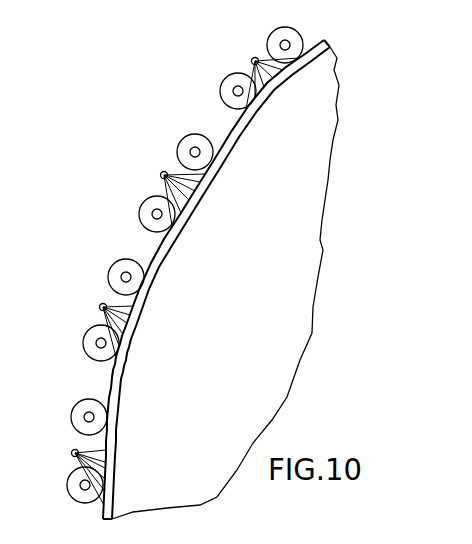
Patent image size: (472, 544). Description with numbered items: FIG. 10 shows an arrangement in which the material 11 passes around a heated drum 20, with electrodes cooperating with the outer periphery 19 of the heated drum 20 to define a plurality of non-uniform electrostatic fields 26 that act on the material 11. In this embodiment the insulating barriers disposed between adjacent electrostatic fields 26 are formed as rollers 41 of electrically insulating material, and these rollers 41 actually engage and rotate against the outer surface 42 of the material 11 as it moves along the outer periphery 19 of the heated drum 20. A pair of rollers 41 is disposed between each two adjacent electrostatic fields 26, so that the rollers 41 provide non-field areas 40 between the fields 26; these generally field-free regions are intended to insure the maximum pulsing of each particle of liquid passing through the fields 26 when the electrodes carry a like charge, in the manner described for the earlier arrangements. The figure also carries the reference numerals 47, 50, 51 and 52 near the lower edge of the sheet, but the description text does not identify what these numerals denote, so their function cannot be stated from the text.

The material 11 is at (159, 247).
The outer periphery 19 is at (213, 176).
The heated drum 20 is at (308, 305).
The electrostatic fields 26 is at (160, 175).
The non-field areas 40 is at (108, 380).
The rollers 41 is at (176, 147).
The outer surface 42 is at (232, 125).
The support 47 is at (346, 540).
The frame member 50 is at (104, 534).
The frame member 51 is at (67, 532).
The frame member 52 is at (146, 541).